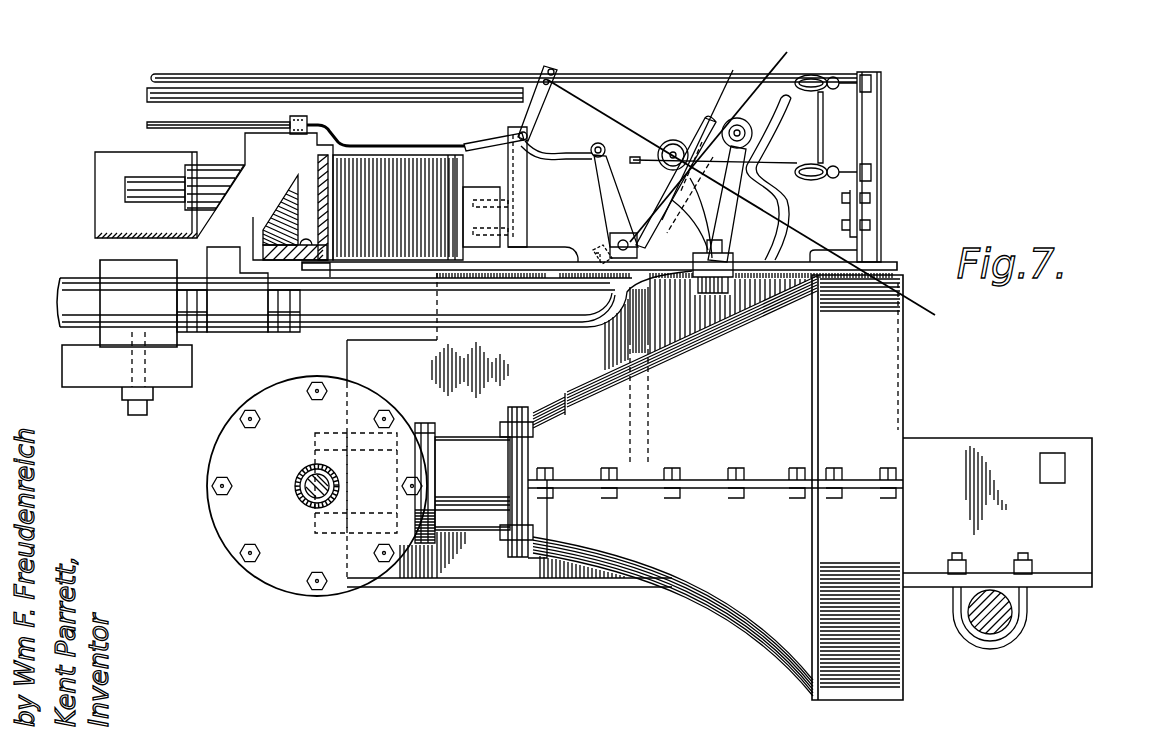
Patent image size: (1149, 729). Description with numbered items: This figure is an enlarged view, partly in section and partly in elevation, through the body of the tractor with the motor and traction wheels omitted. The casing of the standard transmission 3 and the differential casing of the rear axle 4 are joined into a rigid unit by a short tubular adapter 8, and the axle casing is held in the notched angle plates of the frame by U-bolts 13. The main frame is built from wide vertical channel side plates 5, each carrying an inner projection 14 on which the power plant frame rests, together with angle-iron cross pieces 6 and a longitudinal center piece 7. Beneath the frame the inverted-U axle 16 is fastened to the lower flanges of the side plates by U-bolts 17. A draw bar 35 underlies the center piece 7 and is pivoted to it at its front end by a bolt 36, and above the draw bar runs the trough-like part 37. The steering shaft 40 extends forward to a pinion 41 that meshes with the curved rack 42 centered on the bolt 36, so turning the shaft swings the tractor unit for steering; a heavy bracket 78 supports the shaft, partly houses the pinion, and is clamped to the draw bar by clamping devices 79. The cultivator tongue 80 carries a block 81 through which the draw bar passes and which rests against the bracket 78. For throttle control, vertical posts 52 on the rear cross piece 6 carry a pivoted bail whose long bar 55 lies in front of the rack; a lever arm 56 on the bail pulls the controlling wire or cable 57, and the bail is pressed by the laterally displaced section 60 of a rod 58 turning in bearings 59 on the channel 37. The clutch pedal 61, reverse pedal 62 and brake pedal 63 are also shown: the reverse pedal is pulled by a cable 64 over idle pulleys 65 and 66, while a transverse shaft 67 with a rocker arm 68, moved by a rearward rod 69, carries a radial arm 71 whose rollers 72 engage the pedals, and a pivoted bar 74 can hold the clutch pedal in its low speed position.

The transmission 3 is at (602, 481).
The rear axle 4 is at (292, 478).
The side plates 5 is at (975, 415).
The cross pieces 6 is at (852, 214).
The longitudinal center piece 7 is at (878, 260).
The tubular adapter 8 is at (466, 492).
The U-bolts 13 is at (270, 498).
The projection 14 is at (1065, 470).
The axle 16 is at (975, 632).
The U-bolts 17 is at (1028, 630).
The draw bar 35 is at (374, 299).
The bolt 36 is at (717, 294).
The trough-like part 37 is at (95, 165).
The steering shaft 40 is at (140, 180).
The pinion 41 is at (287, 205).
The curved rack 42 is at (310, 246).
The vertical posts 52 is at (527, 152).
The long rod or bar 55 is at (524, 194).
The lever arm 56 is at (545, 72).
The controlling wire or cable 57 is at (597, 110).
The rod 58 is at (185, 122).
The bearings 59 is at (297, 116).
The section 60 is at (437, 147).
The clutch pedal 61 is at (704, 137).
The reverse pedal 62 is at (601, 143).
The brake pedal 63 is at (780, 113).
The cable 64 is at (504, 136).
The idle pulley 65 is at (848, 183).
The idle pulley 66 is at (818, 76).
The transverse shaft 67 is at (610, 243).
The rocker arm 68 is at (598, 173).
The rod 69 is at (380, 88).
The radial arm 71 is at (655, 148).
The rollers 72 is at (652, 137).
The bar 74 is at (638, 338).
The bracket 78 is at (265, 196).
The clamping devices 79 is at (280, 333).
The tongue 80 is at (97, 370).
The block 81 is at (138, 303).